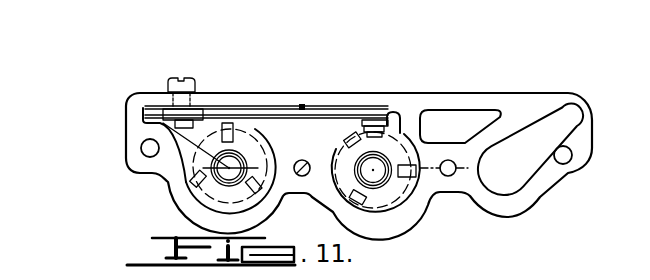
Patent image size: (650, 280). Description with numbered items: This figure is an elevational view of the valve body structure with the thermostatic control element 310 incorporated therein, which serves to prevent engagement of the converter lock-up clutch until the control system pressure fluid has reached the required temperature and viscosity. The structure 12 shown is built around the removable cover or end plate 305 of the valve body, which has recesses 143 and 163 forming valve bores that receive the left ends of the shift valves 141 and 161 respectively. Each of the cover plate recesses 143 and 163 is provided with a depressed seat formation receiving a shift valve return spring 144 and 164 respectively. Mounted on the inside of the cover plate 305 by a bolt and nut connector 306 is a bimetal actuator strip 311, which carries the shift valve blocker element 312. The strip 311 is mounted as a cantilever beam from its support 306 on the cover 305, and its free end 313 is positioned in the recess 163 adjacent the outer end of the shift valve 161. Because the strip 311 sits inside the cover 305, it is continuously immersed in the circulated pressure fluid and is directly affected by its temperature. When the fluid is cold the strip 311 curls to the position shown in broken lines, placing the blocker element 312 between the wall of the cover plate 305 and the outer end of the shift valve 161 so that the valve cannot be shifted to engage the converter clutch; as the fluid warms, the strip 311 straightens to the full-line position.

The side frame plate 12 is at (133, 119).
The shift valve 141 is at (240, 132).
The recess 143 is at (267, 197).
The shift valve return spring 144 is at (212, 178).
The shift valve 161 is at (337, 217).
The recess 163 is at (395, 210).
The shift valve return spring 164 is at (366, 141).
The cover plate 305 is at (392, 106).
The bolt and nut connector 306 is at (210, 63).
The thermostatic control element 310 is at (303, 106).
The bimetal actuator strip 311 is at (229, 107).
The shift valve blocker element 312 is at (386, 128).
The free end 313 is at (402, 118).